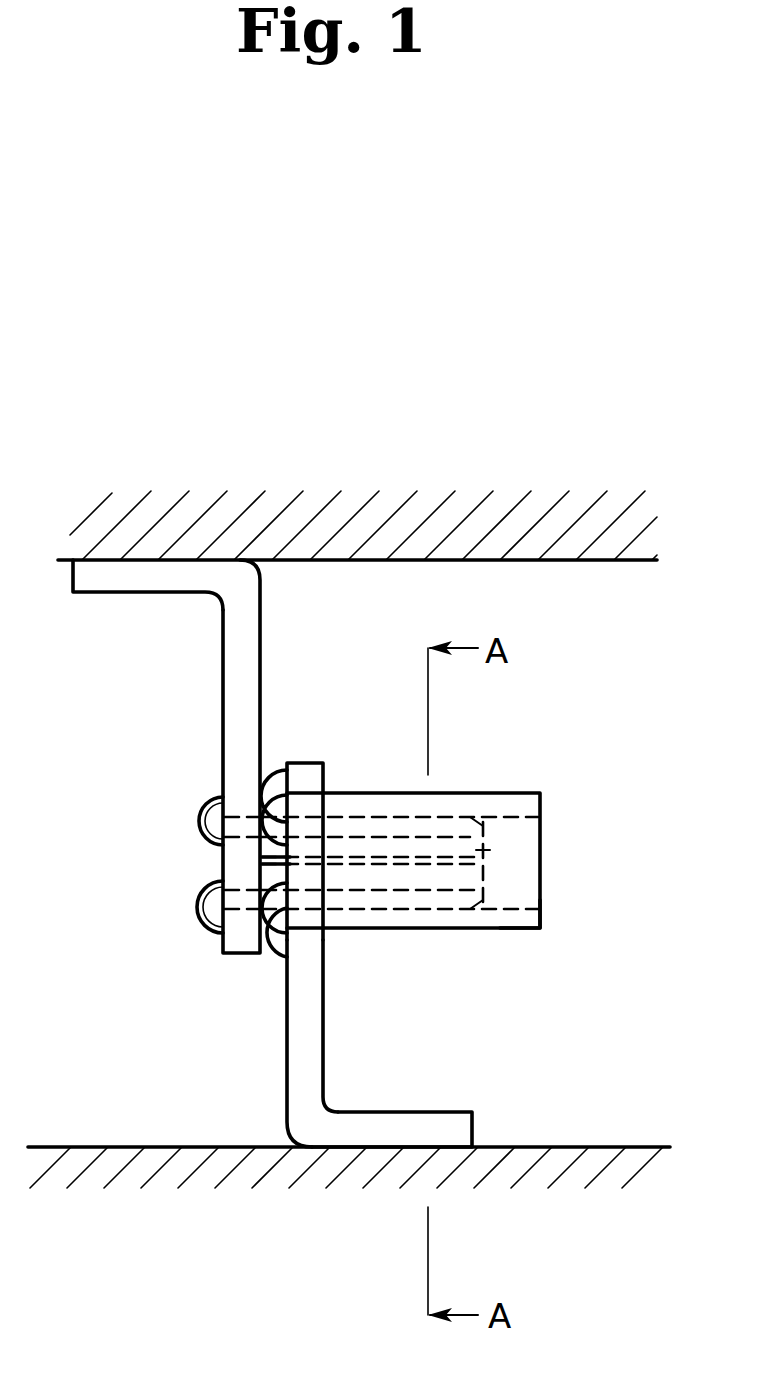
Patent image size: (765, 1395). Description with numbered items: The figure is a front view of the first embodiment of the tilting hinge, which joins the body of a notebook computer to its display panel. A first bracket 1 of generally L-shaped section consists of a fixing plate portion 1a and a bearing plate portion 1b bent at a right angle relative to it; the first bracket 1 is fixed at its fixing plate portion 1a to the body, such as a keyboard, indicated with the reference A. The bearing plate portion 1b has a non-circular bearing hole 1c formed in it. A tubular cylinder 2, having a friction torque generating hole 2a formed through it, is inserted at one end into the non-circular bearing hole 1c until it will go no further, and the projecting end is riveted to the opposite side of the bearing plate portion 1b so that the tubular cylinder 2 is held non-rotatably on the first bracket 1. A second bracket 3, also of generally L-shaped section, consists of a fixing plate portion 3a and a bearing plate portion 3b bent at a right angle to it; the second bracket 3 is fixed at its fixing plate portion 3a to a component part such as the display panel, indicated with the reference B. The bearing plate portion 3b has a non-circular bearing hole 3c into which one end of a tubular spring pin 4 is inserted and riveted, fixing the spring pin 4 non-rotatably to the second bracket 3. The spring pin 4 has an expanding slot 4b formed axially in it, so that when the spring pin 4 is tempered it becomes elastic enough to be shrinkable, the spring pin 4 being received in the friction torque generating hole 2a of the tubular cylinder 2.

The first bracket 1 is at (329, 933).
The fixing plate portion 1a is at (415, 1121).
The bearing plate portion 1b is at (313, 990).
The non-circular bearing hole 1c is at (300, 800).
The tubular cylinder 2 is at (421, 891).
The friction torque generating hole 2a is at (498, 906).
The second bracket 3 is at (203, 756).
The fixing plate portion 3a is at (94, 574).
The bearing plate portion 3b is at (255, 675).
The non-circular bearing hole 3c is at (220, 843).
The tubular spring pin 4 is at (411, 863).
The expanding slot 4b is at (490, 871).
The keyboard A is at (611, 1146).
The display panel B is at (586, 560).